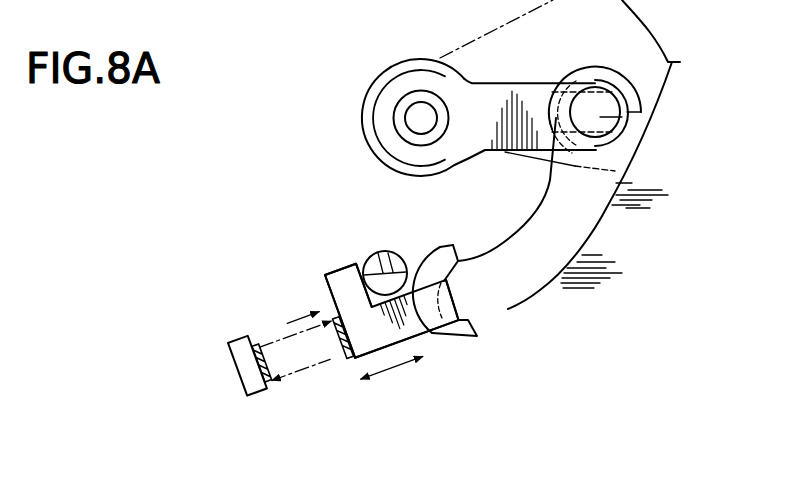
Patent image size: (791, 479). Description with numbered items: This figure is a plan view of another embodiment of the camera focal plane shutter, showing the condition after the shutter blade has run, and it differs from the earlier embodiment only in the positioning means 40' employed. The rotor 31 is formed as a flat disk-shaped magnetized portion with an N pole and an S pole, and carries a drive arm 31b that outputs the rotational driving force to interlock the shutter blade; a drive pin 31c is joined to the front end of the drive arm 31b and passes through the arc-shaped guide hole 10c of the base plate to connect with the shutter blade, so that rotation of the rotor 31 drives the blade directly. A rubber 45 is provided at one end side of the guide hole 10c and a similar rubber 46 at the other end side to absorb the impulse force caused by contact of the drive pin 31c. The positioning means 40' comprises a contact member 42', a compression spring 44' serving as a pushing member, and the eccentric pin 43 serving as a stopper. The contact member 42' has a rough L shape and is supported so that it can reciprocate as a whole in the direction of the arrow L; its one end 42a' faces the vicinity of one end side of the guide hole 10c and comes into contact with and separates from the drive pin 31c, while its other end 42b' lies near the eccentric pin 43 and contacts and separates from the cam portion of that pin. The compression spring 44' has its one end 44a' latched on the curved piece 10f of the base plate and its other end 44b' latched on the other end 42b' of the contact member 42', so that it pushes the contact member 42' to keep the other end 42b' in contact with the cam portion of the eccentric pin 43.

The rotor 31 is at (377, 67).
The drive arm 31b is at (500, 83).
The drive pin 31c is at (603, 115).
The rubber 46 is at (623, 80).
The guide hole 10c is at (581, 222).
The positioning means 40' is at (351, 254).
The contact member 42' is at (421, 351).
The other end of contact member 42b' is at (309, 297).
The eccentric pin 43 is at (374, 245).
The one end of contact member 42a' is at (519, 289).
The rubber 45 is at (477, 334).
The curved piece 10f is at (228, 345).
The compression spring 44' is at (307, 384).
The one end of compression spring 44a' is at (281, 411).
The other end of compression spring 44b' is at (383, 381).